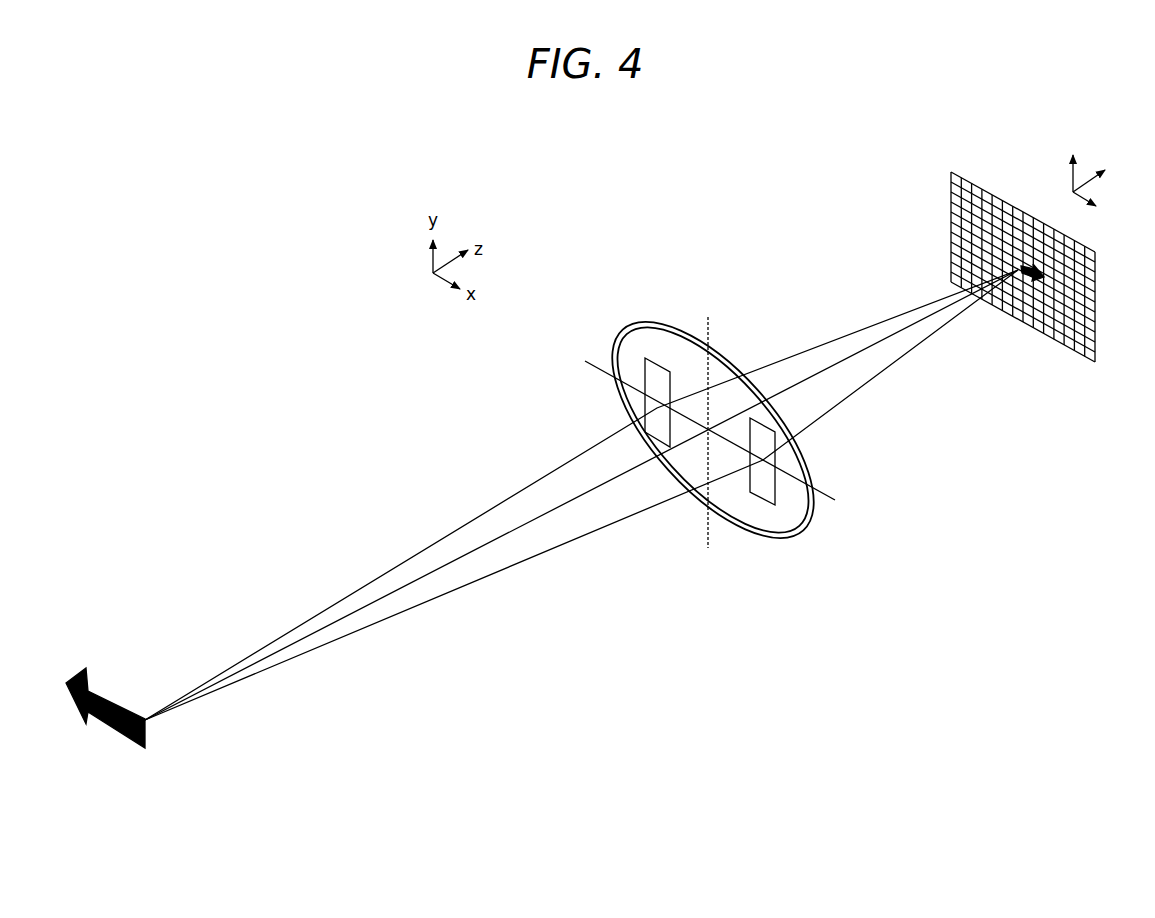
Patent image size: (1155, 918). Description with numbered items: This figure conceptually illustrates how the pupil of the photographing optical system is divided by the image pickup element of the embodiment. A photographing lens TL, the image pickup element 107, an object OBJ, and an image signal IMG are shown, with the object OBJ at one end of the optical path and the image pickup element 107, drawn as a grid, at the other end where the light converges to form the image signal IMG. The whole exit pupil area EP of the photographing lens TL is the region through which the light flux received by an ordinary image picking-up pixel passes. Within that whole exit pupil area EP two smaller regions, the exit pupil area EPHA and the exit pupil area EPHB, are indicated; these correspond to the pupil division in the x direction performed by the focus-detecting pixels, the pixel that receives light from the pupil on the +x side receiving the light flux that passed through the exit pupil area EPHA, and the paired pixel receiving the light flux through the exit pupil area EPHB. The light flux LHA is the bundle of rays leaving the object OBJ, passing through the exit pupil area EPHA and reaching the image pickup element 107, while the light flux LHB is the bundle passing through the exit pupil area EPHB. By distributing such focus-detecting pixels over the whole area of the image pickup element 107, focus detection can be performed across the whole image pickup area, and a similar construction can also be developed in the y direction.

The image pickup element 107 is at (973, 188).
The photographing lens TL is at (688, 323).
The exit pupil area EP is at (660, 347).
The exit pupil area EPHA is at (760, 487).
The exit pupil area EPHB is at (647, 381).
The light flux LHA is at (503, 572).
The light flux LHB is at (490, 505).
The object OBJ is at (105, 692).
The image signal IMG is at (1025, 275).